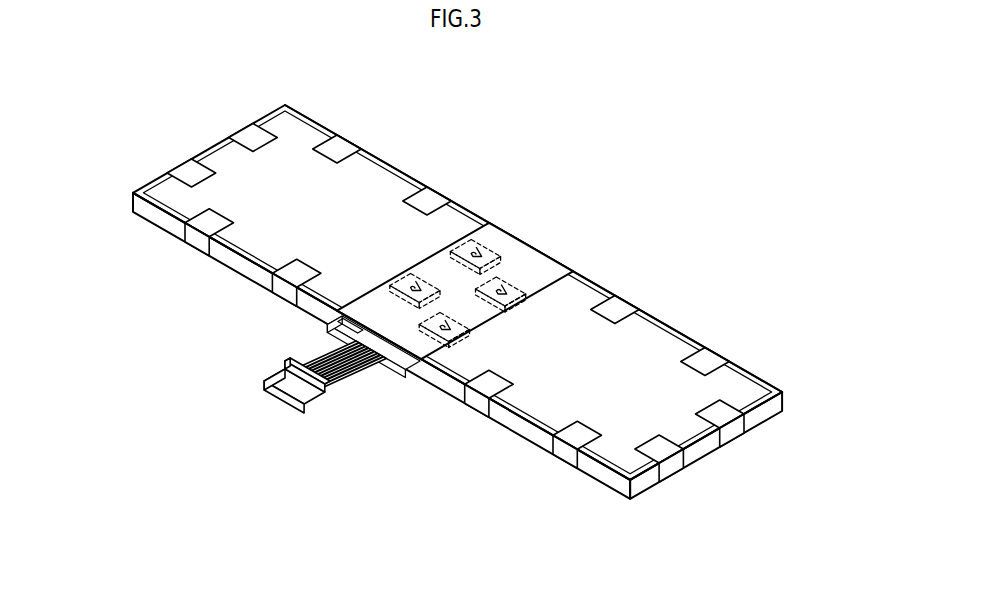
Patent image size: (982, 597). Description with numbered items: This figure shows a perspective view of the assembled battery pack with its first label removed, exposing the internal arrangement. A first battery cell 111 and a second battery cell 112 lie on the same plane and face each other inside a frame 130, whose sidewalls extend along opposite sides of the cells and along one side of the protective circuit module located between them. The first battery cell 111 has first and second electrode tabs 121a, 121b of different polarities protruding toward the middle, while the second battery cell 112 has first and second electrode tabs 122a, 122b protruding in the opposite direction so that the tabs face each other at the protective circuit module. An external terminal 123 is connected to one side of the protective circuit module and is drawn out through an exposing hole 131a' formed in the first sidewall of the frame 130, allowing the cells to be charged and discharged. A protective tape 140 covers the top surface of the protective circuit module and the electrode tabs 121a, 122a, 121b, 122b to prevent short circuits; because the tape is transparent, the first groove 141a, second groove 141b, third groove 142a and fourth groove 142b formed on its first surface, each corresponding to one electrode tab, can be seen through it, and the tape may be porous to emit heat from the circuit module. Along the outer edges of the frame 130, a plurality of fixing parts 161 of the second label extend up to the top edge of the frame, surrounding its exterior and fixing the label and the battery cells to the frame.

The first battery cell 111 is at (668, 355).
The second battery cell 112 is at (372, 183).
The first electrode tab 121a is at (466, 346).
The second electrode tab 121b is at (522, 310).
The first electrode tab 122a is at (402, 277).
The second electrode tab 122b is at (490, 260).
The external terminal 123 is at (282, 398).
The frame 130 is at (648, 477).
The exposing hole 131a' is at (337, 409).
The protective tape 140 is at (530, 263).
The first groove 141a is at (447, 338).
The second groove 141b is at (522, 300).
The third groove 142a is at (355, 320).
The fourth groove 142b is at (466, 248).
The fixing part 161 is at (341, 151).